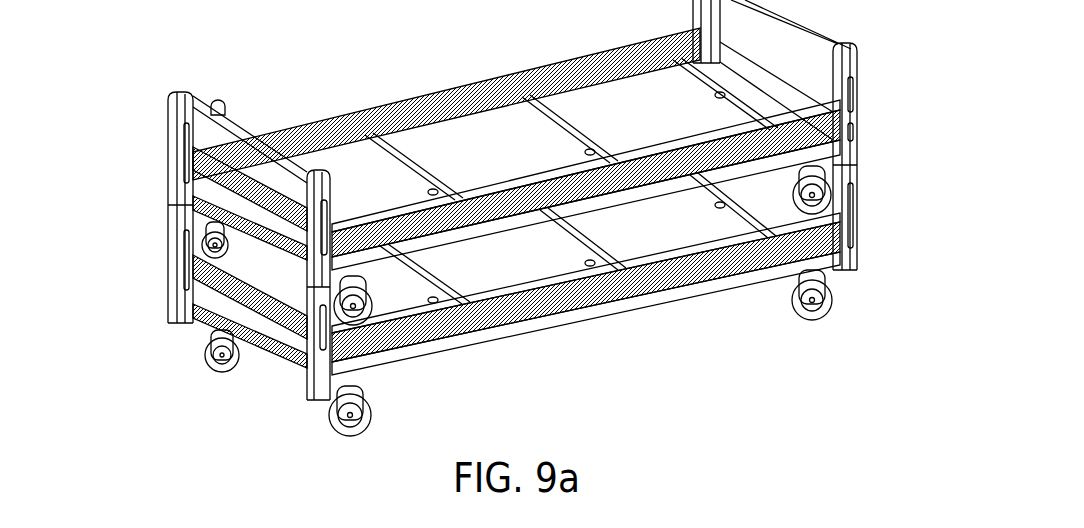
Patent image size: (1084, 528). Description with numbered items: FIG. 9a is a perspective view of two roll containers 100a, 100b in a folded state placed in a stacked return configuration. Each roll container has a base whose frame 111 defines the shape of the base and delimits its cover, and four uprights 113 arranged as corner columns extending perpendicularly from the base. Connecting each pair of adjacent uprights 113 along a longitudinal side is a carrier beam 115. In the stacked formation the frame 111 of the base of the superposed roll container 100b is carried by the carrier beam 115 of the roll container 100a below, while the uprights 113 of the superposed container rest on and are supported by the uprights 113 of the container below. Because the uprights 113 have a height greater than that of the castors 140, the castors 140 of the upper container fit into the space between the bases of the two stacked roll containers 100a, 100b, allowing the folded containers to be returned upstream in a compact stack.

The roll container 100a is at (157, 284).
The roll container 100b is at (157, 162).
The frame 111 is at (180, 202).
The carrier beam 115 is at (185, 222).
The uprights 113 is at (318, 320).
The castors 140 is at (356, 312).